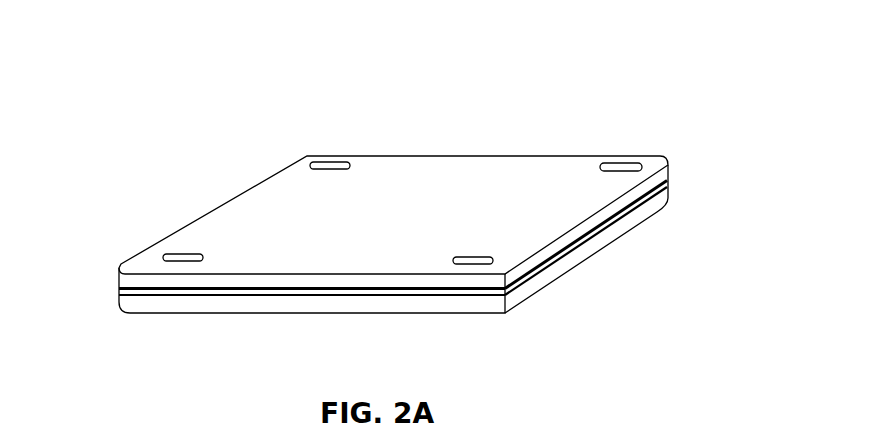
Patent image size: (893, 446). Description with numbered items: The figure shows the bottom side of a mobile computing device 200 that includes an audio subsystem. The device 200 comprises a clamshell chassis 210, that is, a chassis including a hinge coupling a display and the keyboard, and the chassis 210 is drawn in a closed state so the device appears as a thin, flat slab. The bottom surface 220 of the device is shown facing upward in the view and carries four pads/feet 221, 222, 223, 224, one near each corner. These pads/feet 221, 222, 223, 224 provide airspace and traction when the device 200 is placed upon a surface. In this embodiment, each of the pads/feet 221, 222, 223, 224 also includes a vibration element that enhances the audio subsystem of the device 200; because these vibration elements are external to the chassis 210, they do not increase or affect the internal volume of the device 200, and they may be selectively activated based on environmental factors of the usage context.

The mobile computing device 200 is at (423, 231).
The clamshell chassis 210 is at (657, 195).
The bottom surface 220 is at (418, 203).
The pad/foot 221 is at (179, 256).
The pad/foot 222 is at (494, 260).
The pad/foot 223 is at (328, 164).
The pad/foot 224 is at (622, 163).